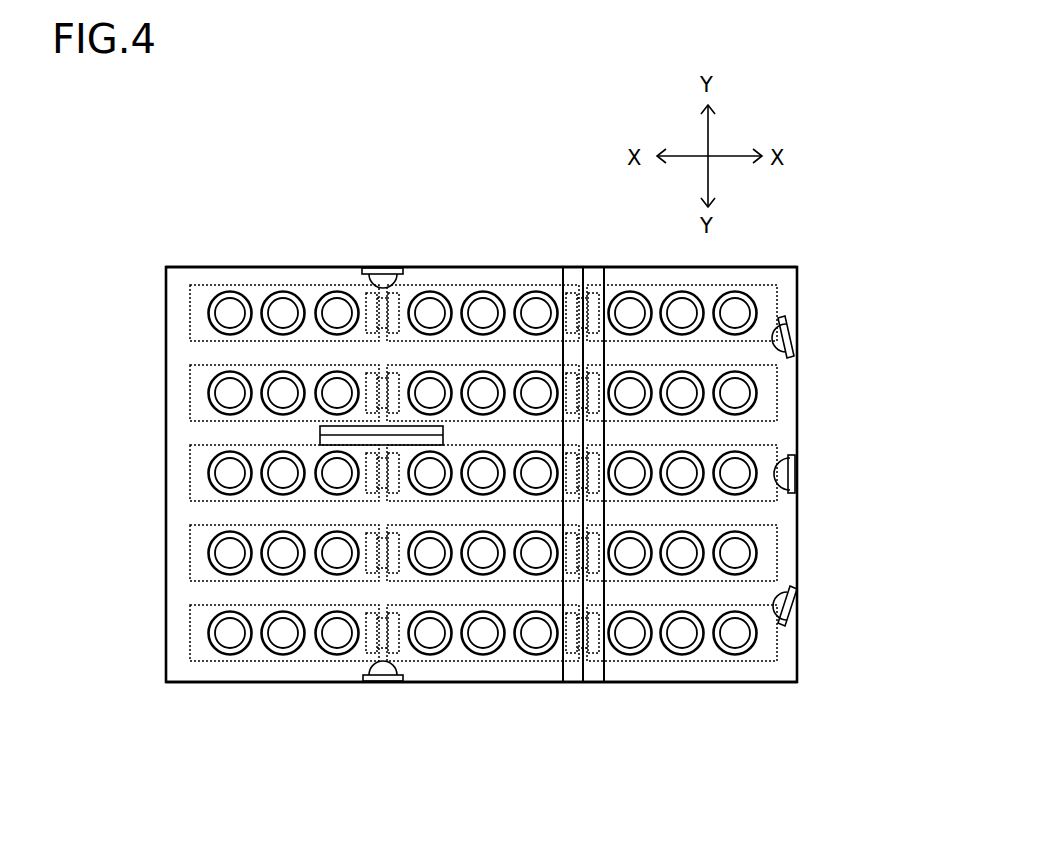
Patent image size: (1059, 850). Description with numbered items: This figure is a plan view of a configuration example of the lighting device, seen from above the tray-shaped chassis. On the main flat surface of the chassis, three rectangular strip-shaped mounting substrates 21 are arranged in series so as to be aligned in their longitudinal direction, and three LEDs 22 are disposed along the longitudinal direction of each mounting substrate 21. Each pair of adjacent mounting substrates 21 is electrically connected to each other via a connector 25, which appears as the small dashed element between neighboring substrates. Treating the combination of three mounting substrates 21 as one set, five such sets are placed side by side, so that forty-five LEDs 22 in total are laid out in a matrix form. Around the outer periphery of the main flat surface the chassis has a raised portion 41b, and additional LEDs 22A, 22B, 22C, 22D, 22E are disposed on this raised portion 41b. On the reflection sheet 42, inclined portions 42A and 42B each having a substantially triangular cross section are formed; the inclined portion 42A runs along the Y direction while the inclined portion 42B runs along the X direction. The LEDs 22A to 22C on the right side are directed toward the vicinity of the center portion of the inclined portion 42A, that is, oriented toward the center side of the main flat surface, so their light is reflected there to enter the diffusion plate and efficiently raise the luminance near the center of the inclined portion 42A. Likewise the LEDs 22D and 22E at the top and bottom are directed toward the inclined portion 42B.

The mounting substrate 21 is at (308, 285).
The LED 22 is at (230, 312).
The LED 22A is at (790, 358).
The LED 22B is at (797, 497).
The LED 22C is at (790, 587).
The LED 22D is at (364, 275).
The LED 22E is at (360, 676).
The connector 25 is at (401, 293).
The raised portion 41b is at (253, 683).
The reflection sheet 42 is at (200, 436).
The inclined portion 42A is at (597, 682).
The inclined portion 42B is at (320, 432).